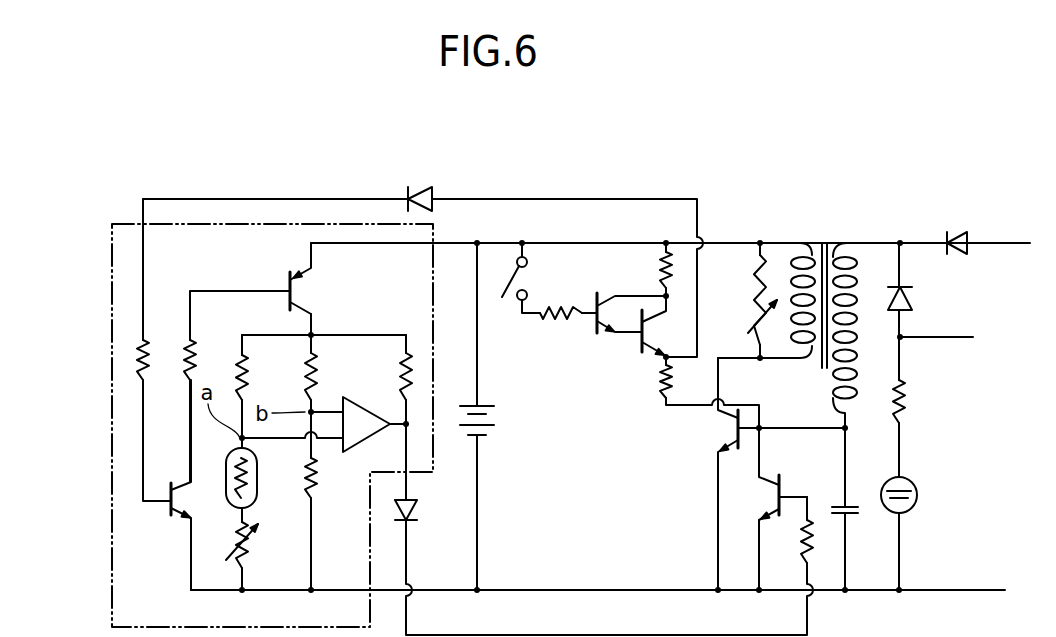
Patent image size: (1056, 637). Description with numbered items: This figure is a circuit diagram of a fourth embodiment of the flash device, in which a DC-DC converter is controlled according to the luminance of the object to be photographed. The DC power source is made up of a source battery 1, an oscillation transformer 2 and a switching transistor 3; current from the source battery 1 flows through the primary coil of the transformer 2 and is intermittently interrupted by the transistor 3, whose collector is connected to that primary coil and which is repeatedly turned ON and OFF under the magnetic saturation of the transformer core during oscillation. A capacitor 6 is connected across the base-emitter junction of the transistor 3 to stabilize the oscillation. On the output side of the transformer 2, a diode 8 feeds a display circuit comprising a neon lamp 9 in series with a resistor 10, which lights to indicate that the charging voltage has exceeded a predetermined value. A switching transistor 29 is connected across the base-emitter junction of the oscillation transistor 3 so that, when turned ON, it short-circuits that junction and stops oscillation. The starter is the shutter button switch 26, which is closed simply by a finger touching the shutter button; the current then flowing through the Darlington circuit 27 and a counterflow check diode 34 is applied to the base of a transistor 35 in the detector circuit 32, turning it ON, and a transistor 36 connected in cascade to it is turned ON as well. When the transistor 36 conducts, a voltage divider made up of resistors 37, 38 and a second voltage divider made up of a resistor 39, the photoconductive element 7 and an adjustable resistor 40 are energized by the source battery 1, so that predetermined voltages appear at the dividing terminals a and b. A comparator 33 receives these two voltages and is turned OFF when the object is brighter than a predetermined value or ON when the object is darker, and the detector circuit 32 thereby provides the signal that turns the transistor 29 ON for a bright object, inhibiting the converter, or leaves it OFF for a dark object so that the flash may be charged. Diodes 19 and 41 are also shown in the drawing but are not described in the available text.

The source battery 1 is at (493, 423).
The oscillation transformer 2 is at (824, 240).
The switching transistor 3 is at (730, 437).
The capacitor 6 is at (830, 505).
The photoconductive element 7 is at (252, 465).
The diode 8 is at (912, 300).
The neon lamp 9 is at (918, 497).
The resistor 10 is at (905, 400).
The diode 19 is at (963, 230).
The switch 26 is at (525, 278).
The Darlington circuit 27 is at (628, 322).
The switching transistor 29 is at (766, 505).
The detector circuit 32 is at (112, 302).
The comparator 33 is at (360, 412).
The counterflow check diode 34 is at (424, 188).
The transistor 35 is at (175, 517).
The transistor 36 is at (306, 282).
The resistor 37 is at (302, 374).
The resistor 38 is at (316, 485).
The resistor 39 is at (234, 377).
The adjustable resistor 40 is at (253, 563).
The diode 41 is at (412, 510).